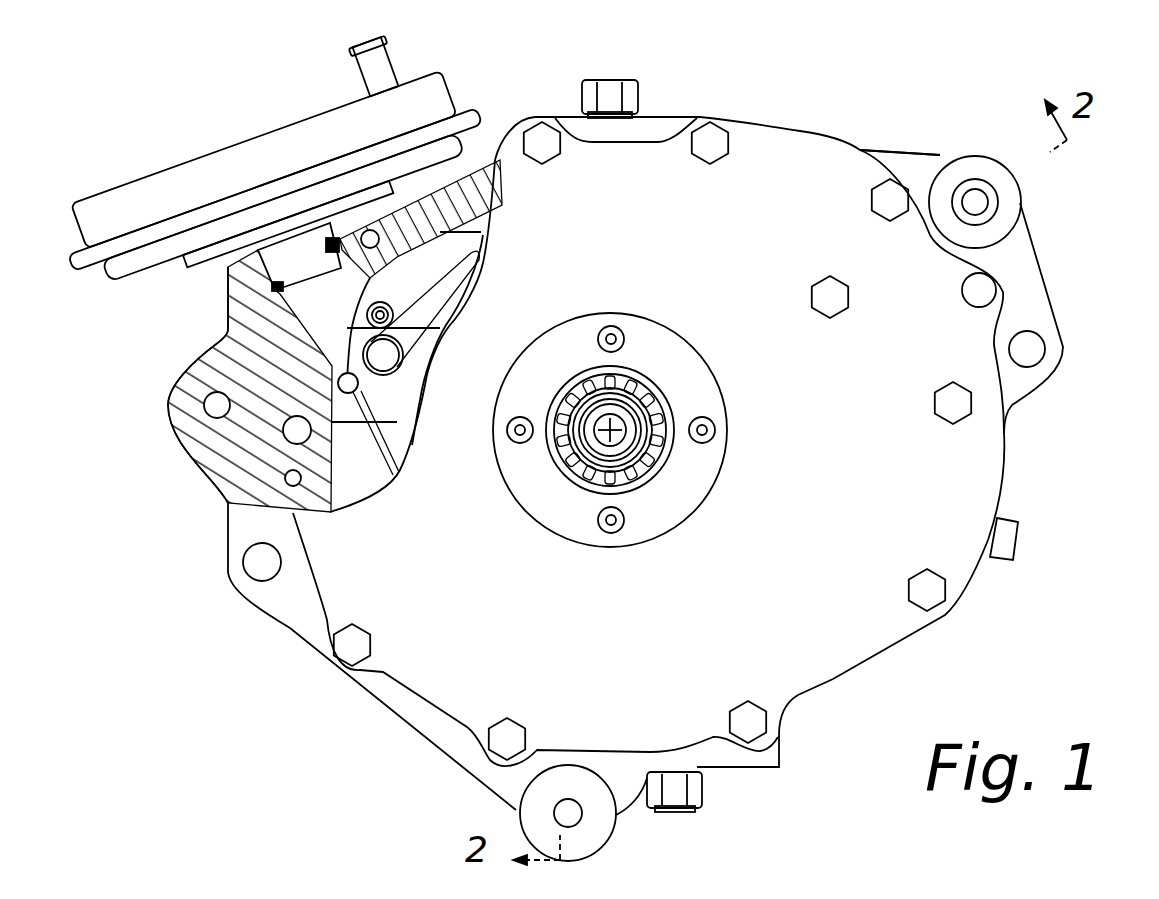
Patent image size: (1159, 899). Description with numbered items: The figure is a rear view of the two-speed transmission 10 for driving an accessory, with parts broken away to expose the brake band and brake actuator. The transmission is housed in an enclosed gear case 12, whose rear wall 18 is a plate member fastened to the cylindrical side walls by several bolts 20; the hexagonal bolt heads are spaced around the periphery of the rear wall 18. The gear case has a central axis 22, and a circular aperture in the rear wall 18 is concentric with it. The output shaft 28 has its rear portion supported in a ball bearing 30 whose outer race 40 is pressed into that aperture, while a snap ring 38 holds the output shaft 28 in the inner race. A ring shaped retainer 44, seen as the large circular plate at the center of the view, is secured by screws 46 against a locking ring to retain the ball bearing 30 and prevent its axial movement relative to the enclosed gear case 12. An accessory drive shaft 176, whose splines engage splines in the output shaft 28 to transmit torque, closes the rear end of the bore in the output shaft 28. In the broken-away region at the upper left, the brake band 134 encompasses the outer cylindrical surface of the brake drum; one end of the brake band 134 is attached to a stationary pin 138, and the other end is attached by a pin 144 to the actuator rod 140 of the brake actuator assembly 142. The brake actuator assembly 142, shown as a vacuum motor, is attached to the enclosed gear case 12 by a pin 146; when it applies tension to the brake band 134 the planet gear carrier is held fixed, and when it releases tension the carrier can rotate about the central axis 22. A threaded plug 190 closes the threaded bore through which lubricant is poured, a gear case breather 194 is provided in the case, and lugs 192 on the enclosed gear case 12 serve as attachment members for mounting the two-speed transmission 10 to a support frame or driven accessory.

The two-speed transmission 10 is at (905, 145).
The enclosed gear case 12 is at (748, 132).
The rear wall 18 is at (975, 458).
The bolts 20 is at (878, 212).
The central axis 22 is at (628, 445).
The output shaft 28 is at (627, 407).
The ball bearing 30 is at (626, 395).
The snap ring 38 is at (640, 417).
The outer race 40 is at (590, 367).
The ring shaped retainer 44 is at (545, 507).
The screws 46 is at (638, 215).
The brake band 134 is at (475, 273).
The stationary pin 138 is at (395, 356).
The actuator rod 140 is at (330, 322).
The brake actuator assembly 142 is at (155, 165).
The pin 144 is at (338, 385).
The pin 146 is at (337, 237).
The accessory drive shaft 176 is at (600, 420).
The threaded plug 190 is at (1020, 545).
The lug 192 is at (1040, 292).
The gear case breather 194 is at (604, 92).